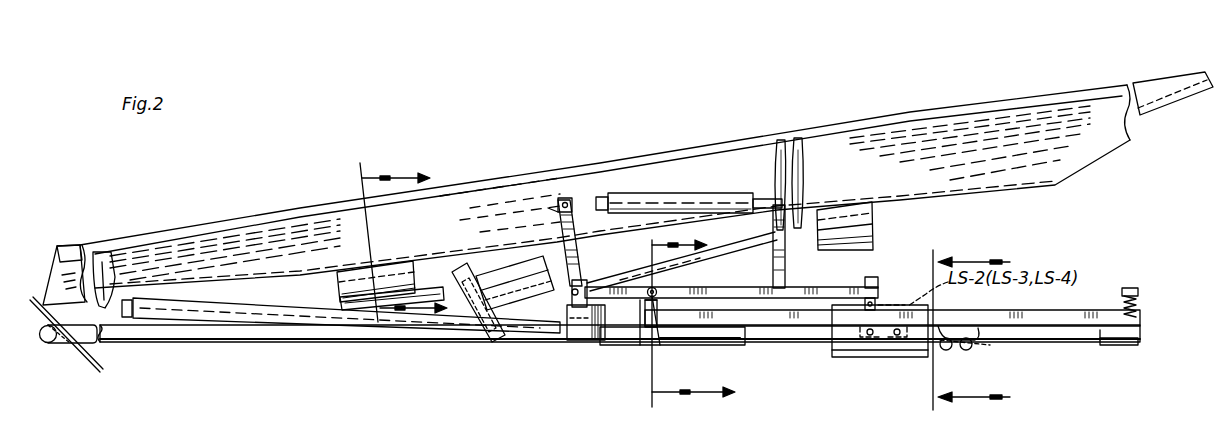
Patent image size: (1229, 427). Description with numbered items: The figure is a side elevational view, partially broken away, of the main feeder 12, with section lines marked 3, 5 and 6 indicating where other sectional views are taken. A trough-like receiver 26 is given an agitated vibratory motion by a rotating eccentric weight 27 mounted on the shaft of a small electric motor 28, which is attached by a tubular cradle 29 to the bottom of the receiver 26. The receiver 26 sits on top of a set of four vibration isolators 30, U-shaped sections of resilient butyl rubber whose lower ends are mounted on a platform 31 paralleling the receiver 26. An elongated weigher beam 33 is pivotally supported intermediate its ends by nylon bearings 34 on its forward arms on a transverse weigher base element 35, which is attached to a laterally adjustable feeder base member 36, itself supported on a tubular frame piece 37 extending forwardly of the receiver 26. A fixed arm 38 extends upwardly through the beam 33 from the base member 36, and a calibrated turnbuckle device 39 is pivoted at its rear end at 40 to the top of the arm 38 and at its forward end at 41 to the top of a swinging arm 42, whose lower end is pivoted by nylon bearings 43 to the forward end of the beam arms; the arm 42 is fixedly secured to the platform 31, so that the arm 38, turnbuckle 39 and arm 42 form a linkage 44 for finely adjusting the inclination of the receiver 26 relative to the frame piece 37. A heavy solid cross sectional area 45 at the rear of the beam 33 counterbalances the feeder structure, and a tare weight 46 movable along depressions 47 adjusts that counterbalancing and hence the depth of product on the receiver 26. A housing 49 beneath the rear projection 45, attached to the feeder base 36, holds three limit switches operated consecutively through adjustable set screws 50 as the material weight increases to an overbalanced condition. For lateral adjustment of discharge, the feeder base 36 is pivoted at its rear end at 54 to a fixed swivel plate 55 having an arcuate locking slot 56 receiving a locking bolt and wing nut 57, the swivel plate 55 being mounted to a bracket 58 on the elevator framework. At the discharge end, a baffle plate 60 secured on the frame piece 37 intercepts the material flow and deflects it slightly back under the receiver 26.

The main feeder 12 is at (910, 100).
The trough-like receiver 26 is at (150, 244).
The rotating eccentric weight 27 is at (448, 340).
The electric motor 28 is at (518, 269).
The tubular cradle 29 is at (218, 323).
The vibration isolators 30 is at (337, 286).
The platform 31 is at (428, 298).
The weigher beam 33 is at (757, 314).
The nylon bearings 34 is at (656, 299).
The weigher base element 35 is at (641, 304).
The feeder base member 36 is at (812, 334).
The tubular frame piece 37 is at (52, 340).
The fixed arm 38 is at (790, 262).
The turnbuckle device 39 is at (688, 192).
The pivot 40 is at (782, 166).
The pivot 41 is at (567, 198).
The swinging arm 42 is at (547, 222).
The nylon bearings 43 is at (586, 282).
The linkage 44 is at (548, 205).
The solid cross sectional area 45 is at (731, 324).
The tare weight 46 is at (576, 340).
The depressions 47 is at (624, 288).
The housing 49 is at (878, 352).
The adjustable set screws 50 is at (878, 278).
The pivot 54 is at (1132, 288).
The swivel plate 55 is at (1078, 334).
The arcuate locking slot 56 is at (995, 344).
The locking bolt and wing nut 57 is at (978, 352).
The bracket 58 is at (1128, 346).
The baffle plate 60 is at (92, 370).
The section line 3- 3 is at (409, 242).
The section line 5- 5 is at (980, 330).
The section line 6- 6 is at (693, 323).